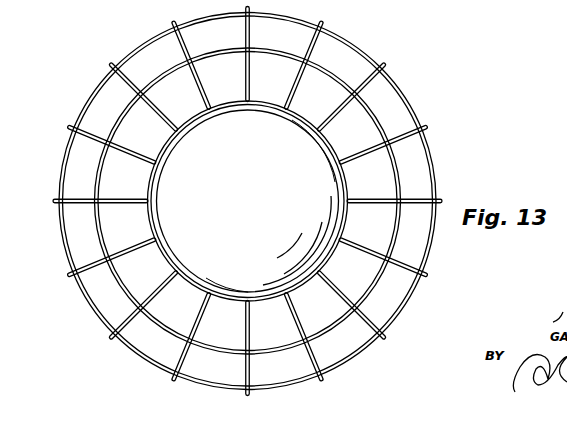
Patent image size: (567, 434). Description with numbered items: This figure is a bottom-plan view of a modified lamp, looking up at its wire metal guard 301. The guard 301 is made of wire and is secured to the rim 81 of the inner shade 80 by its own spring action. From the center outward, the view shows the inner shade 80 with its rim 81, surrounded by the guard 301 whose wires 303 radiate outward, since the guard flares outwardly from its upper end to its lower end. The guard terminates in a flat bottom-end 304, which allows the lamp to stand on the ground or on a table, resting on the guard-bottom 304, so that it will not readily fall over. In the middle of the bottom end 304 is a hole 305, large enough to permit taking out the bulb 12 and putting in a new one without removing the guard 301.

The bulb 12 is at (210, 185).
The inner shade 80 is at (390, 173).
The rim 81 is at (420, 241).
The metal guard 301 is at (355, 39).
The wires 303 is at (67, 129).
The flat bottom-end 304 is at (390, 74).
The hole 305 is at (276, 100).